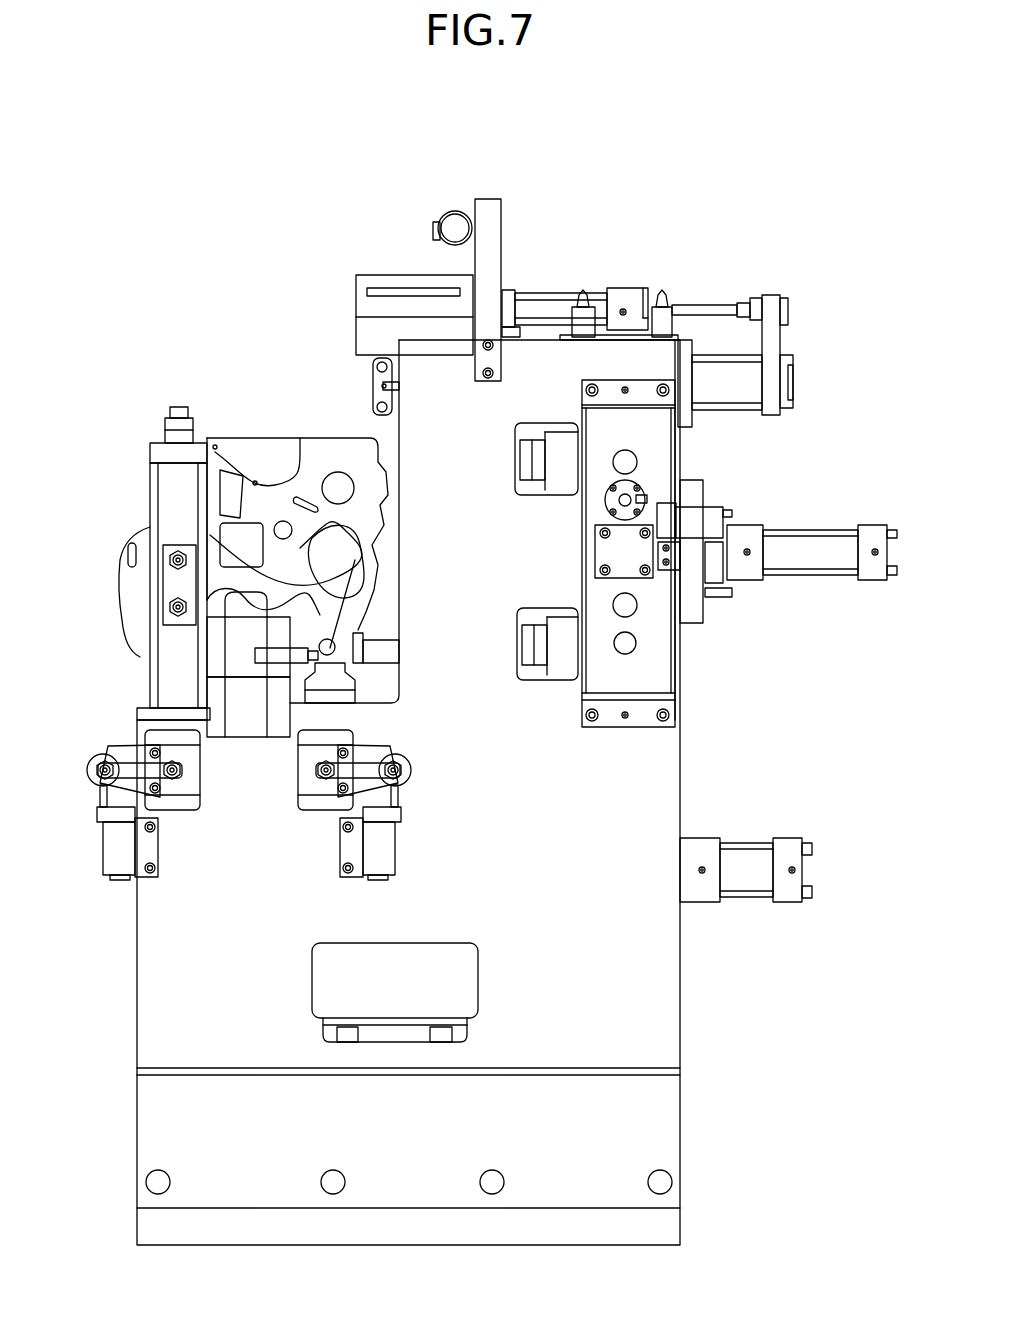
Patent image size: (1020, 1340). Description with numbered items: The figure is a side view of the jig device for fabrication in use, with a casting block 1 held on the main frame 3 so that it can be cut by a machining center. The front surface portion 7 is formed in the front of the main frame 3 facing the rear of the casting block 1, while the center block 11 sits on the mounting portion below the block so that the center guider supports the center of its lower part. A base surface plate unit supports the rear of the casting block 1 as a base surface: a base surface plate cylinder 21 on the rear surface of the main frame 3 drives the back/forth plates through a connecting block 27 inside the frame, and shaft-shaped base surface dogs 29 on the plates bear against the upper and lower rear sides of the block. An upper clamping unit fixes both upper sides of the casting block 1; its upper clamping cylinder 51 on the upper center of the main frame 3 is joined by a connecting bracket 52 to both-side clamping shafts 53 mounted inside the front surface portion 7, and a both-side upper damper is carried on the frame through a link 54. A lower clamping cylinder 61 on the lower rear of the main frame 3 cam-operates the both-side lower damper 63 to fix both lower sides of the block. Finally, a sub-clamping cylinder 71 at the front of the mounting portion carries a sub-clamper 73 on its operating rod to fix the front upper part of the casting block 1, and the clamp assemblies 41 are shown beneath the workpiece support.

The casting block 1 is at (225, 440).
The main frame 3 is at (640, 773).
The front surface portion 7 is at (378, 430).
The center block 11 is at (240, 643).
The base surface plate cylinder 21 is at (805, 558).
The connecting block 27 is at (567, 470).
The base surface dog 29 is at (383, 655).
The clamp units 41 is at (310, 778).
The upper clamping cylinder 51 is at (557, 310).
The connecting bracket 52 is at (770, 343).
The both-side clamping shaft 53 is at (718, 398).
The link 54 is at (365, 372).
The lower clamping cylinder 61 is at (743, 863).
The both-side lower damper 63 is at (242, 702).
The sub-clamping cylinder 71 is at (167, 670).
The sub-clamper 73 is at (178, 429).